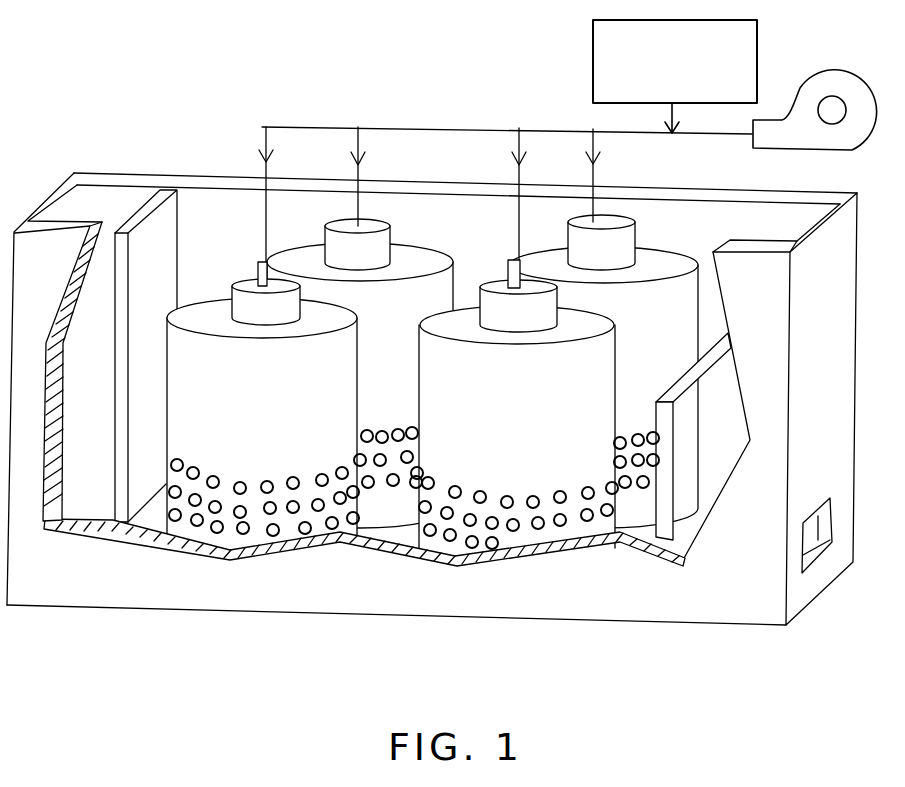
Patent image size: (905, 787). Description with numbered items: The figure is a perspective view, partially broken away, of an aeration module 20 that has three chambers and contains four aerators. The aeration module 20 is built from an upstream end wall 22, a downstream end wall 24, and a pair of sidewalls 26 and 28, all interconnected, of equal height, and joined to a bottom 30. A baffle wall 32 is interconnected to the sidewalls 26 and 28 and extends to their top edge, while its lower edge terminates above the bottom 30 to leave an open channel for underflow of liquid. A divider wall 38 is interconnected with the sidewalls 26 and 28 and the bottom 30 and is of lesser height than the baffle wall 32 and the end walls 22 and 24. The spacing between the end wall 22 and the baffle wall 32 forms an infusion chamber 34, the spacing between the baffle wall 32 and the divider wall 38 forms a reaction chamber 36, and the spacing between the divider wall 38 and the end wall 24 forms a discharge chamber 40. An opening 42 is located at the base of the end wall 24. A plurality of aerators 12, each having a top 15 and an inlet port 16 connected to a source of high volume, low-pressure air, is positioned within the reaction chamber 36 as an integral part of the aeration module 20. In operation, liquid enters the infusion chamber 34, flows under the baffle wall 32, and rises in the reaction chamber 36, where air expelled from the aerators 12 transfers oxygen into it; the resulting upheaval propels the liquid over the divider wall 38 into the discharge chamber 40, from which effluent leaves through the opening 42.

The aerator 12 is at (278, 438).
The top 15 is at (217, 310).
The inlet port 16 is at (253, 277).
The aeration module 20 is at (448, 348).
The upstream end wall 22 is at (52, 193).
The downstream end wall 24 is at (840, 240).
The sidewall 26 is at (62, 346).
The sidewall 28 is at (218, 175).
The bottom 30 is at (238, 613).
The baffle wall 32 is at (162, 238).
The infusion chamber 34 is at (102, 485).
The reaction chamber 36 is at (503, 228).
The divider wall 38 is at (675, 383).
The discharge chamber 40 is at (728, 452).
The opening 42 is at (807, 518).